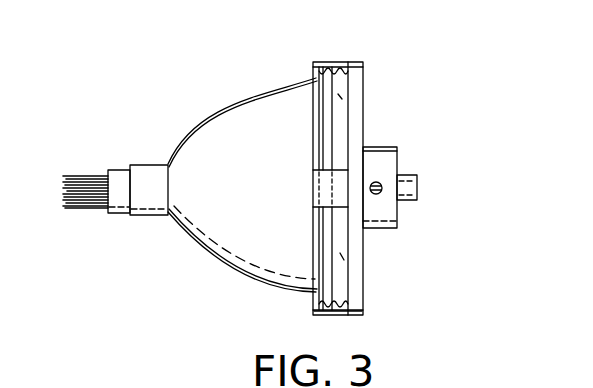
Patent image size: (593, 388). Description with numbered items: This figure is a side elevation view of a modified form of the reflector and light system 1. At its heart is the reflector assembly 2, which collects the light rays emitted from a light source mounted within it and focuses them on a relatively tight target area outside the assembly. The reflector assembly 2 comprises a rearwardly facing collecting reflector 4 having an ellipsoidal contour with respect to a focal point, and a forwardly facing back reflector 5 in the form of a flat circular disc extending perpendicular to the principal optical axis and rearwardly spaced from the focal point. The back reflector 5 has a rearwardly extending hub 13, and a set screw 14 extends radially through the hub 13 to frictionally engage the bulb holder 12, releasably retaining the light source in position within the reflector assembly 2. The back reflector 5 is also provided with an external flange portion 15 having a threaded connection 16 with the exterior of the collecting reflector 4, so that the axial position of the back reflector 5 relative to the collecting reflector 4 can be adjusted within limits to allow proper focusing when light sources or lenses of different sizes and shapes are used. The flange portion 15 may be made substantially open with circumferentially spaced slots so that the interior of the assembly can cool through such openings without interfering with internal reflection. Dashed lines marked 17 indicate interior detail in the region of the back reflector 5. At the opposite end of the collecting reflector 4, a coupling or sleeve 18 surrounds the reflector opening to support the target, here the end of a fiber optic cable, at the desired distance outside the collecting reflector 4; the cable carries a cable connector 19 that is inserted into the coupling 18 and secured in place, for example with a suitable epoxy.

The reflector and light system 1 is at (325, 51).
The reflector assembly 2 is at (214, 119).
The collecting reflector 4 is at (267, 268).
The back reflector 5 is at (360, 106).
The bulb holder 12 is at (417, 181).
The hub 13 is at (390, 160).
The set screw 14 is at (378, 193).
The external flange portion 15 is at (337, 316).
The threaded connection 16 is at (313, 77).
The gasket lines 17 is at (340, 97).
The coupling or sleeve 18 is at (153, 165).
The cable connector 19 is at (121, 170).